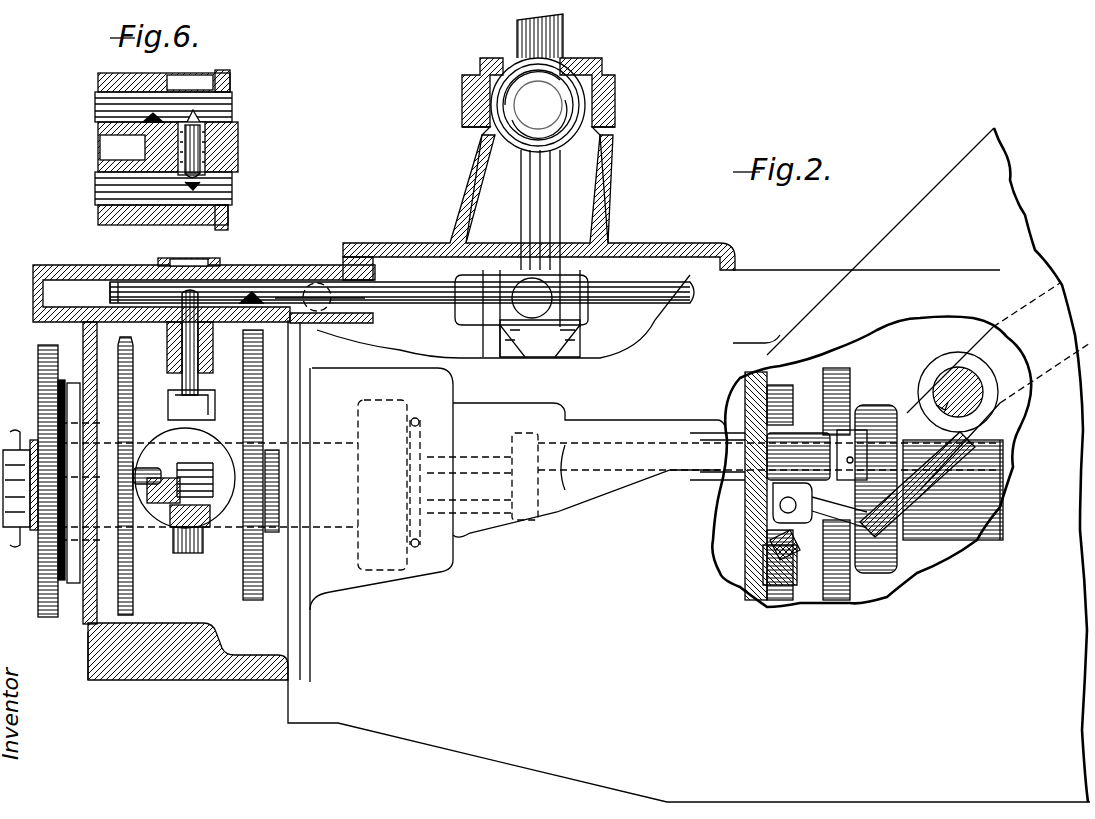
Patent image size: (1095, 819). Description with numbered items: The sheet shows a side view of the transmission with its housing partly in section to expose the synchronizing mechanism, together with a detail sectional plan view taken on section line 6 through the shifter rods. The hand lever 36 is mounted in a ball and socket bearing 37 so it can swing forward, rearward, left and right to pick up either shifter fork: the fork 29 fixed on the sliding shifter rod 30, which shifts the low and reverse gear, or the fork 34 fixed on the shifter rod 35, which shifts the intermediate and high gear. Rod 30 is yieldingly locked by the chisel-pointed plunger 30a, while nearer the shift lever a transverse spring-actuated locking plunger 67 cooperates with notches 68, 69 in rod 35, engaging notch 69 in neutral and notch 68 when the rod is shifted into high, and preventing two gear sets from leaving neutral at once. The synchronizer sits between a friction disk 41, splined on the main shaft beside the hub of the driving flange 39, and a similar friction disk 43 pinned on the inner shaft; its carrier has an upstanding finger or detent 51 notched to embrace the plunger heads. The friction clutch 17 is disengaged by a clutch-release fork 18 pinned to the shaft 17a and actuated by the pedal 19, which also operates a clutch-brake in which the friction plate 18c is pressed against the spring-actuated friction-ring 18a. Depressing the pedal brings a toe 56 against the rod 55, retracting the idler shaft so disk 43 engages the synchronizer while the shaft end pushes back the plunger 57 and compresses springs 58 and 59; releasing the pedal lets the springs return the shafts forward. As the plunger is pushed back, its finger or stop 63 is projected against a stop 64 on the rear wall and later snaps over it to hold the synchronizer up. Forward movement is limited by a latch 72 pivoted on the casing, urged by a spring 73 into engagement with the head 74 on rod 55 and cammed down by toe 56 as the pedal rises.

In FIG. 6, the notch 68 is at (110, 78).
In FIG. 6, the sliding shifter rod 35 is at (97, 100).
In FIG. 6, the notch 69 is at (203, 113).
In FIG. 6, the transverse spring-actuated locking plunger 67 is at (213, 145).
In FIG. 2, the transverse spring-actuated locking plunger 67 is at (313, 290).
In FIG. 6, the sliding shifter rod 30 is at (223, 191).
In FIG. 2, the sliding shifter rod 30 is at (423, 298).
In FIG. 2, the hand lever 36 is at (560, 28).
In FIG. 2, the ball and socket bearing 37 is at (617, 100).
In FIG. 2, the fork 34 is at (583, 340).
In FIG. 2, the fork 29 is at (493, 337).
In FIG. 2, the section line 6— 6 is at (328, 296).
In FIG. 2, the driving flange 39 is at (43, 363).
In FIG. 2, the friction disk 41 is at (132, 598).
In FIG. 2, the friction disk 43 is at (247, 593).
In FIG. 2, the plunger 30a is at (192, 353).
In FIG. 2, the finger or detent 51 is at (170, 397).
In FIG. 2, the plunger 57 is at (217, 463).
In FIG. 2, the finger or stop 63 is at (135, 466).
In FIG. 2, the stop 64 is at (165, 503).
In FIG. 2, the spring 59 is at (170, 527).
In FIG. 2, the spring 58 is at (203, 527).
In FIG. 2, the rod 55 is at (727, 437).
In FIG. 2, the spring-actuated friction-ring 18a is at (837, 370).
In FIG. 2, the friction plate 18c is at (845, 365).
In FIG. 2, the pedal 19 is at (977, 340).
In FIG. 2, the head 74 is at (855, 440).
In FIG. 2, the shaft 17a is at (987, 405).
In FIG. 2, the toe 56 is at (880, 445).
In FIG. 2, the clutch-release fork 18 is at (945, 482).
In FIG. 2, the friction clutch 17 is at (1013, 465).
In FIG. 2, the spring 73 is at (767, 557).
In FIG. 2, the latch 72 is at (870, 520).